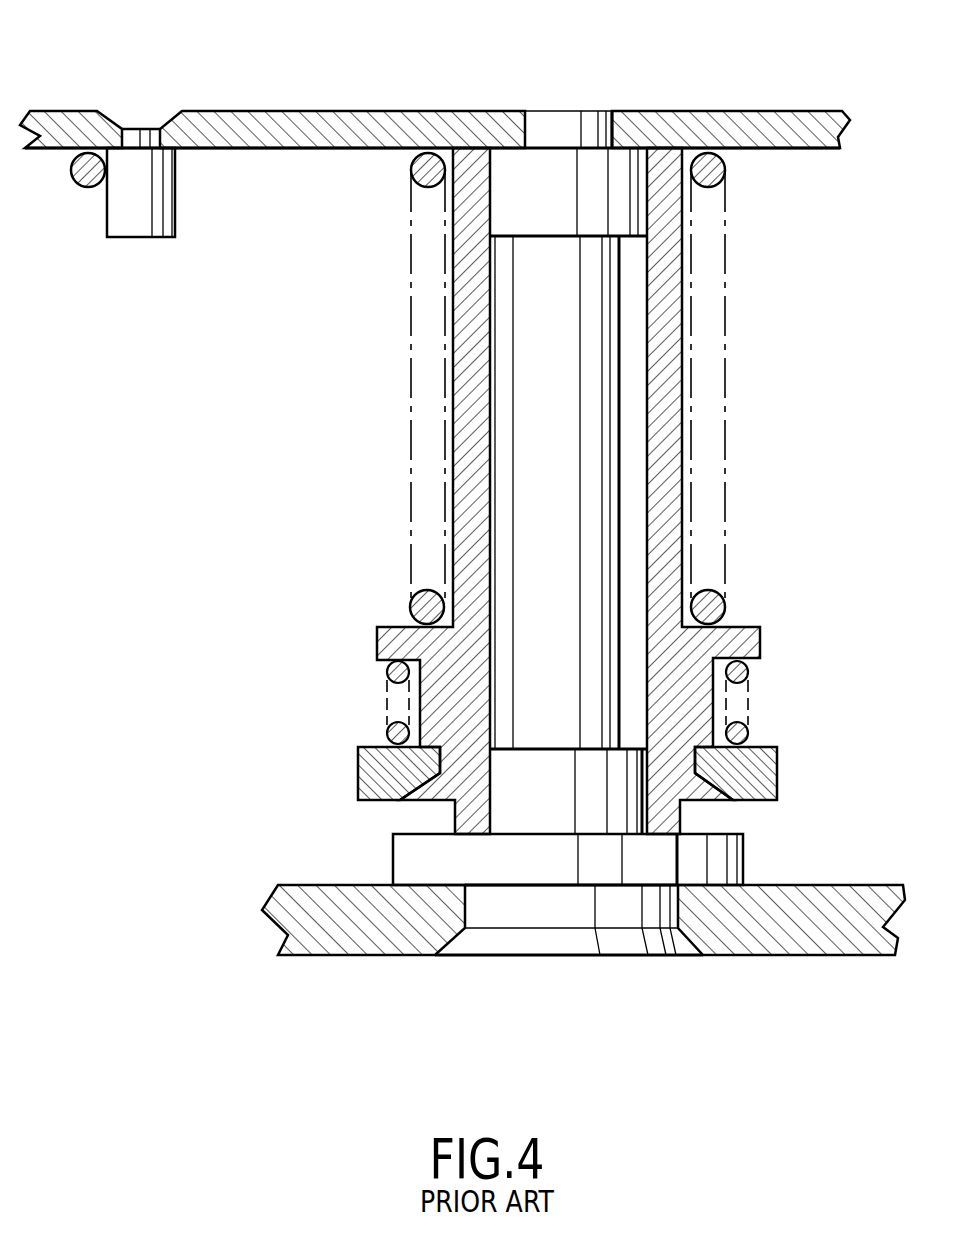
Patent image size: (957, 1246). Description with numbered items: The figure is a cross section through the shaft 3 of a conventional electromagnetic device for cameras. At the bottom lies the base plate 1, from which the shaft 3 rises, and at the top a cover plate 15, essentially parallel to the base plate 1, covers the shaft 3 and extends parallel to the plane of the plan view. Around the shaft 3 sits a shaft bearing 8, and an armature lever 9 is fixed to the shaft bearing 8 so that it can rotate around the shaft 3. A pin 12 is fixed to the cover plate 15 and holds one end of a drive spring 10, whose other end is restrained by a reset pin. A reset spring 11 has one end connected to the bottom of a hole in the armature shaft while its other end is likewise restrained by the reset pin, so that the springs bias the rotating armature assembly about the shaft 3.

The base plate 1 is at (790, 938).
The shaft 3 is at (565, 120).
The shaft bearing 8 is at (740, 635).
The armature lever 9 is at (763, 760).
The drive spring 10 is at (722, 163).
The reset spring 11 is at (743, 668).
The pin 12 is at (153, 223).
The cover plate 15 is at (803, 113).